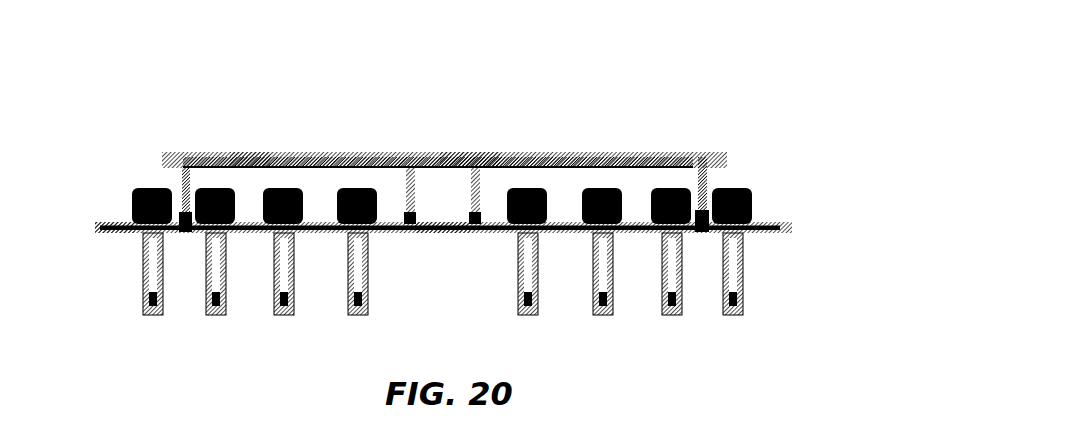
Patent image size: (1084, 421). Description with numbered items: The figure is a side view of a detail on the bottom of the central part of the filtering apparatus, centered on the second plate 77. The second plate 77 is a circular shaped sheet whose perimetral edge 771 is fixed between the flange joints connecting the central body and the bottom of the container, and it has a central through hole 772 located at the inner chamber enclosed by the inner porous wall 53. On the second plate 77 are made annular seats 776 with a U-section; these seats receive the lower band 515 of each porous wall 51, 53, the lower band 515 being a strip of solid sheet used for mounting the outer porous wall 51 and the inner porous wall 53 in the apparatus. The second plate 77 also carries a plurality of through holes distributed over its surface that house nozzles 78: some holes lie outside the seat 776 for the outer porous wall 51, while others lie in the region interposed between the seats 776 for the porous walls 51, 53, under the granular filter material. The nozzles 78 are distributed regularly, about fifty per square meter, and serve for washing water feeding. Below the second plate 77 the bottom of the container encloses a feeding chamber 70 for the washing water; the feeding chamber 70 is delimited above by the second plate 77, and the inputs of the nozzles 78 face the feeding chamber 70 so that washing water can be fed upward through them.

The outer porous wall 51 is at (697, 146).
The lower band 515 is at (247, 192).
The inner porous wall 53 is at (400, 182).
The annular seat 776 is at (181, 216).
The second plate 77 is at (771, 210).
The perimetral edge 771 is at (103, 234).
The central through hole 772 is at (435, 226).
The feeding chamber 70 is at (572, 283).
The nozzle 78 is at (350, 219).